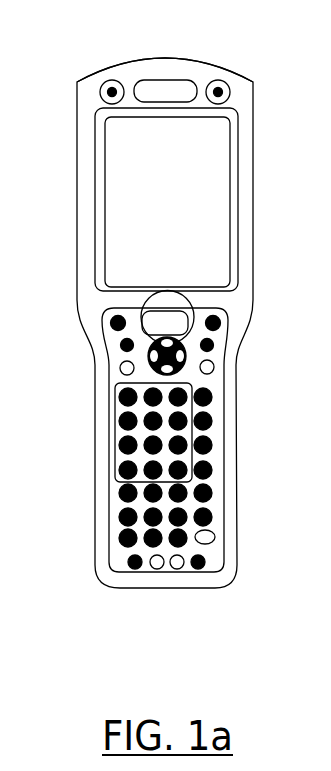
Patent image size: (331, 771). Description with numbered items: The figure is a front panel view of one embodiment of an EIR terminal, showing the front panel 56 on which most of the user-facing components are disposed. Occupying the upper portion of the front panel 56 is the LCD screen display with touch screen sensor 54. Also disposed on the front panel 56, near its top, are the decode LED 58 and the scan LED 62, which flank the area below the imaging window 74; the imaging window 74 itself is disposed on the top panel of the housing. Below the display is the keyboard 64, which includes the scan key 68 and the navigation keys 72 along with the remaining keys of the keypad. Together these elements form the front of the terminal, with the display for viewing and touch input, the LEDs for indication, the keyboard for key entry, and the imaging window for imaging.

The LCD screen display with touch screen sensor 54 is at (115, 200).
The front panel 56 is at (77, 138).
The decode LED 58 is at (100, 89).
The scan LED 62 is at (230, 91).
The keyboard 64 is at (122, 433).
The scan key 68 is at (143, 312).
The navigation keys 72 is at (141, 359).
The imaging window 74 is at (164, 57).